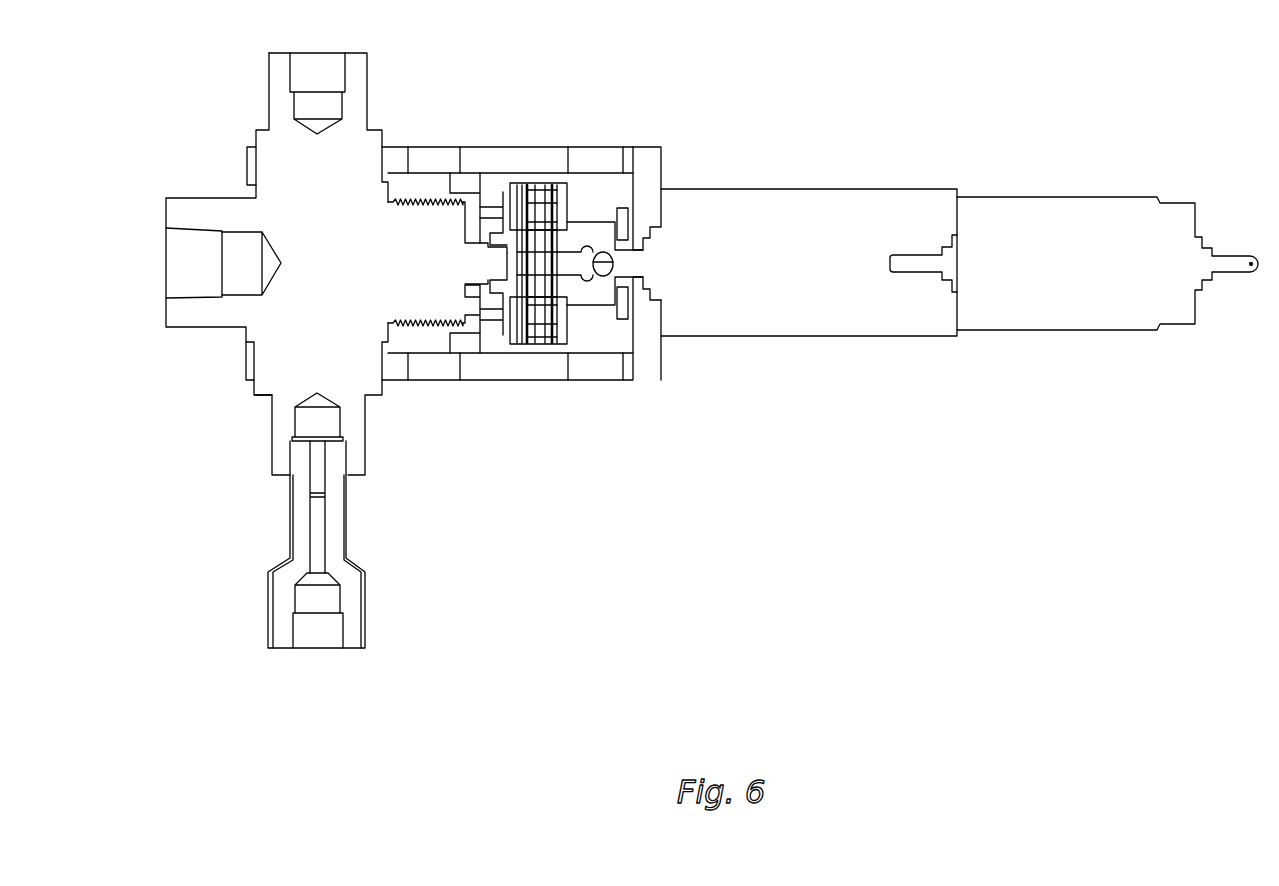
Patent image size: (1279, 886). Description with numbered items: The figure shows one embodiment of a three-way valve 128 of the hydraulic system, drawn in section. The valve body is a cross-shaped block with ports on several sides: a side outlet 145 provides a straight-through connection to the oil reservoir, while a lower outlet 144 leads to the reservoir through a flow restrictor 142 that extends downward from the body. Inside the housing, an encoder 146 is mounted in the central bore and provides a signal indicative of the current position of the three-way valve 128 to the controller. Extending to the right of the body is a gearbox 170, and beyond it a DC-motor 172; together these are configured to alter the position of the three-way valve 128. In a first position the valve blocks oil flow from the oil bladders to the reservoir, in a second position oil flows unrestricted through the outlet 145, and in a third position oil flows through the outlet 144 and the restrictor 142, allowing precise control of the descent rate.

The three-way valve 128 is at (912, 78).
The flow restrictor 142 is at (340, 548).
The outlet 144 is at (358, 435).
The outlet 145 is at (227, 198).
The encoder 146 is at (522, 187).
The gearbox 170 is at (785, 189).
The DC-motor 172 is at (1043, 197).